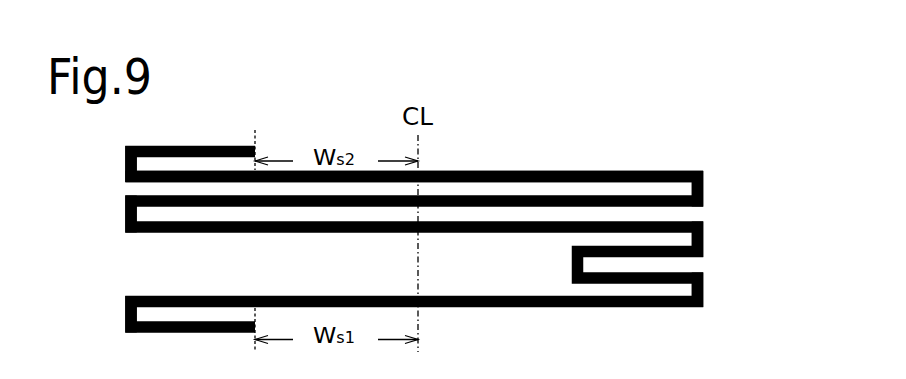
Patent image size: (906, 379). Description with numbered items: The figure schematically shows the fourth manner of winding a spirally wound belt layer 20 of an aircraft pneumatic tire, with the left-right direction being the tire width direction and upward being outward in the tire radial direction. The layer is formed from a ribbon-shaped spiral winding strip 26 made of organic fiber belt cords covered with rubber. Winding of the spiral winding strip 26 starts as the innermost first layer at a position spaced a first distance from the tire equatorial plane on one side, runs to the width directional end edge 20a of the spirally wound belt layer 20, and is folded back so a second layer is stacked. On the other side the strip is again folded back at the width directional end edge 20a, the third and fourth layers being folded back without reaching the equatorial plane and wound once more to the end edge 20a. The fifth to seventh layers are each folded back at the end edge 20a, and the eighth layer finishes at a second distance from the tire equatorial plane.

The spirally wound belt layer 20 is at (555, 167).
The width directional end edge 20a is at (125, 160).
The spiral winding strip 26 is at (598, 170).